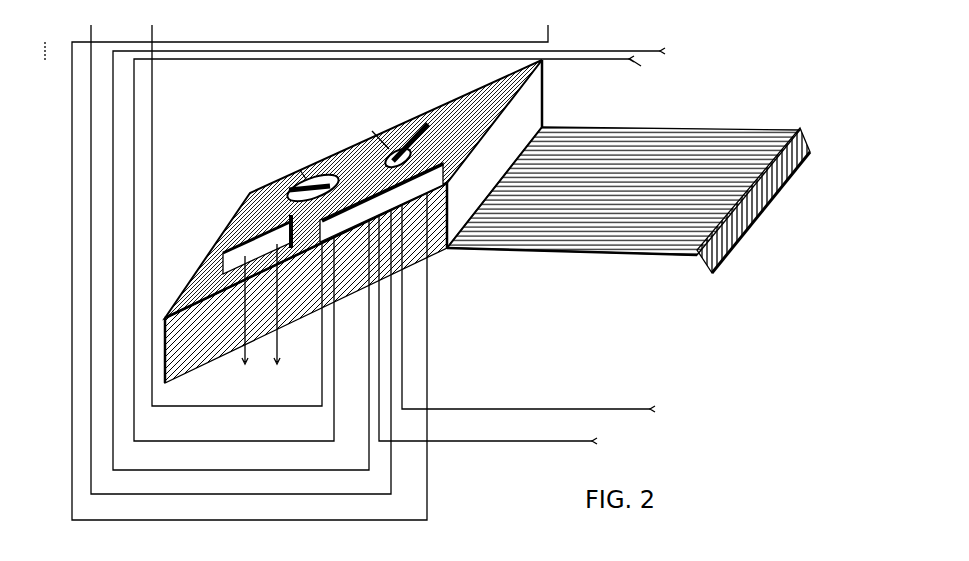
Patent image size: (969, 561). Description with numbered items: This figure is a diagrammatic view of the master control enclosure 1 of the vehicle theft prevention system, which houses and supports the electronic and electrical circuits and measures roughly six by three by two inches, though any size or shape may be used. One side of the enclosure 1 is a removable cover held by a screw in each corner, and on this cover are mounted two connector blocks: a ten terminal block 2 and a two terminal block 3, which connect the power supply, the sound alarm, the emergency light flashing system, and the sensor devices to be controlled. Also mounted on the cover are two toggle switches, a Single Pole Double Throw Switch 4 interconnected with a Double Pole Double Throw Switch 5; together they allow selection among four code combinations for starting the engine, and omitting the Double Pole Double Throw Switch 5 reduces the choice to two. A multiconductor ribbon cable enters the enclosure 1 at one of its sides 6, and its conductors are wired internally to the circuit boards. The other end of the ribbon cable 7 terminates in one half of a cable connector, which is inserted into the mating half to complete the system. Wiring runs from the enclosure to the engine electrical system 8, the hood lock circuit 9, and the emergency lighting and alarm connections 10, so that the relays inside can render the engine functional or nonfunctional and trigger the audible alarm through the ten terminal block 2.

The master control enclosure 1 is at (353, 222).
The ten terminal block 2 is at (426, 255).
The two terminal block 3 is at (345, 230).
The Single Pole Double Throw Switch (SPDT) 4 is at (357, 225).
The Double Pole Double Throw Switch (DPDT) 5 is at (466, 264).
The side of enclosure where ribbon cable enters 6 is at (589, 291).
The ribbon cable end with cable connector half 7 is at (450, 267).
The engine electrical system wire 8 is at (599, 314).
The hood lock wire 9 is at (413, 199).
The power supply wire 10 is at (310, 281).